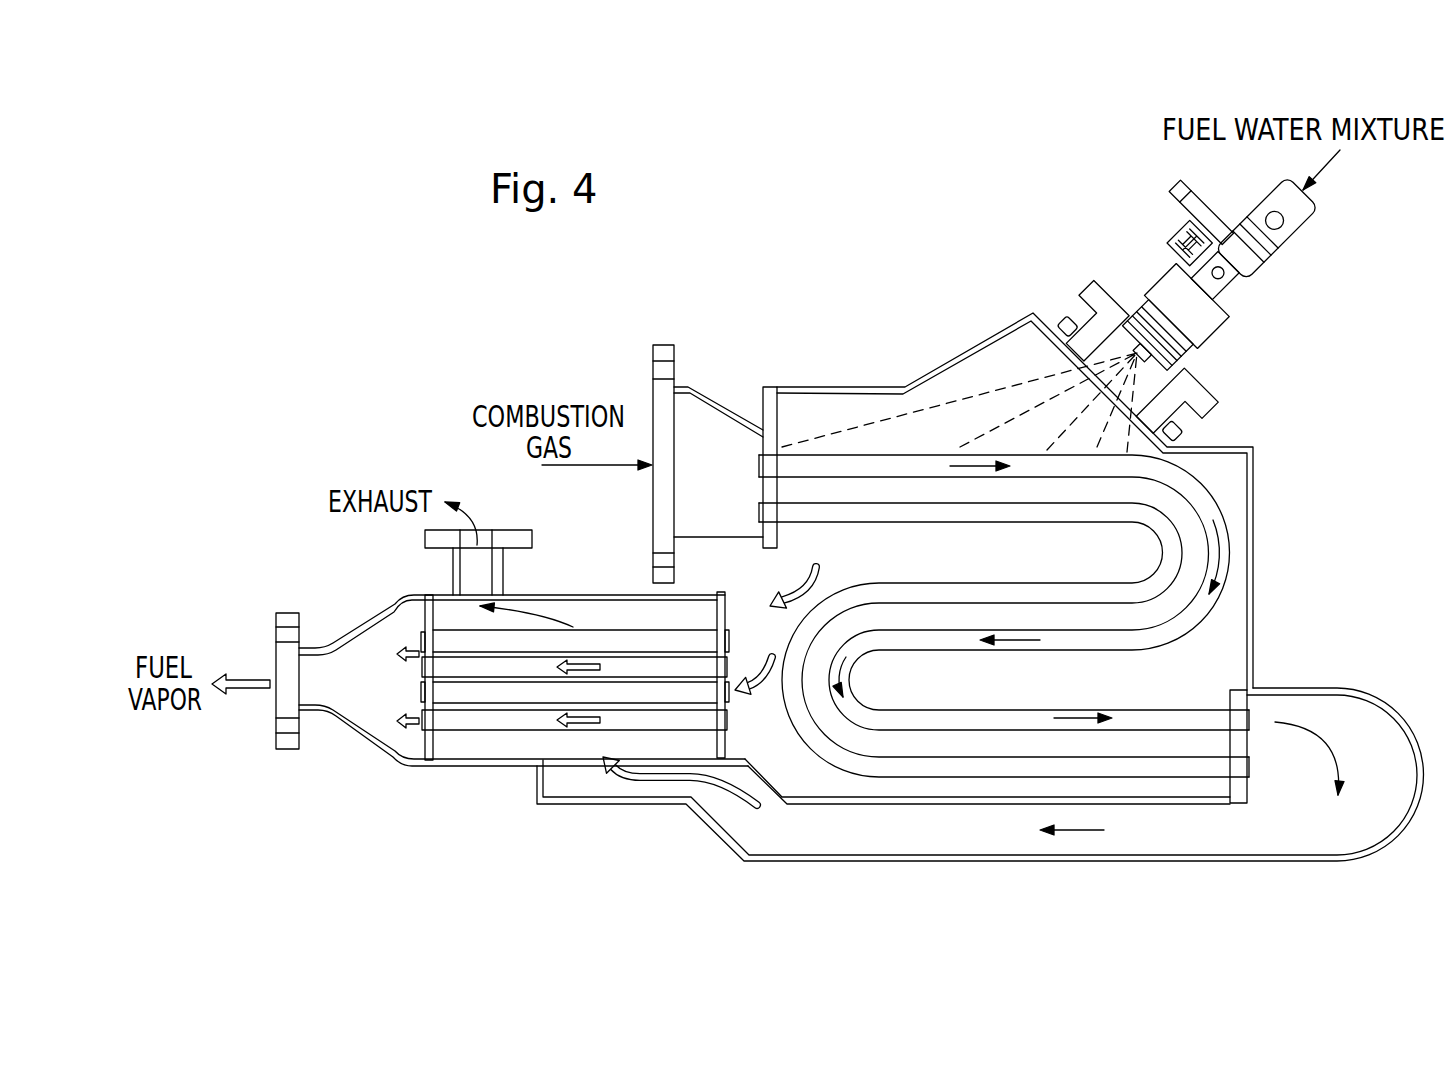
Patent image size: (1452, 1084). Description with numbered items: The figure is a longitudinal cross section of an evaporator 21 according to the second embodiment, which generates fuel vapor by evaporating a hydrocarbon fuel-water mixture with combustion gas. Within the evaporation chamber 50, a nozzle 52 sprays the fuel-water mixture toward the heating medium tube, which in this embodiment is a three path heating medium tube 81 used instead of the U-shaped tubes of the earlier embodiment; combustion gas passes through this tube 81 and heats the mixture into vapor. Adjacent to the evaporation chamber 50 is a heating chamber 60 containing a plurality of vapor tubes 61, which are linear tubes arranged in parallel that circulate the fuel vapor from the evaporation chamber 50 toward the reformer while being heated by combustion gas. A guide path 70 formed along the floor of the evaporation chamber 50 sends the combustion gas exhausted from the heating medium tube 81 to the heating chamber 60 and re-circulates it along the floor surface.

The evaporator 21 is at (862, 292).
The nozzle 52 is at (1140, 275).
The three path heating medium tube 81 is at (1230, 550).
The evaporation chamber 50 is at (1234, 643).
The heating chamber 60 is at (486, 748).
The vapor tubes 61 is at (603, 637).
The guide path 70 is at (958, 830).